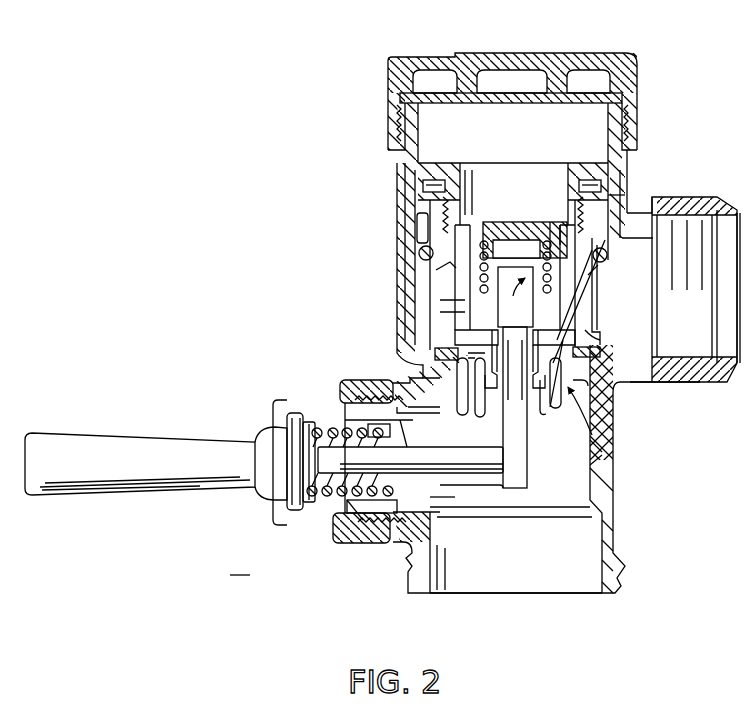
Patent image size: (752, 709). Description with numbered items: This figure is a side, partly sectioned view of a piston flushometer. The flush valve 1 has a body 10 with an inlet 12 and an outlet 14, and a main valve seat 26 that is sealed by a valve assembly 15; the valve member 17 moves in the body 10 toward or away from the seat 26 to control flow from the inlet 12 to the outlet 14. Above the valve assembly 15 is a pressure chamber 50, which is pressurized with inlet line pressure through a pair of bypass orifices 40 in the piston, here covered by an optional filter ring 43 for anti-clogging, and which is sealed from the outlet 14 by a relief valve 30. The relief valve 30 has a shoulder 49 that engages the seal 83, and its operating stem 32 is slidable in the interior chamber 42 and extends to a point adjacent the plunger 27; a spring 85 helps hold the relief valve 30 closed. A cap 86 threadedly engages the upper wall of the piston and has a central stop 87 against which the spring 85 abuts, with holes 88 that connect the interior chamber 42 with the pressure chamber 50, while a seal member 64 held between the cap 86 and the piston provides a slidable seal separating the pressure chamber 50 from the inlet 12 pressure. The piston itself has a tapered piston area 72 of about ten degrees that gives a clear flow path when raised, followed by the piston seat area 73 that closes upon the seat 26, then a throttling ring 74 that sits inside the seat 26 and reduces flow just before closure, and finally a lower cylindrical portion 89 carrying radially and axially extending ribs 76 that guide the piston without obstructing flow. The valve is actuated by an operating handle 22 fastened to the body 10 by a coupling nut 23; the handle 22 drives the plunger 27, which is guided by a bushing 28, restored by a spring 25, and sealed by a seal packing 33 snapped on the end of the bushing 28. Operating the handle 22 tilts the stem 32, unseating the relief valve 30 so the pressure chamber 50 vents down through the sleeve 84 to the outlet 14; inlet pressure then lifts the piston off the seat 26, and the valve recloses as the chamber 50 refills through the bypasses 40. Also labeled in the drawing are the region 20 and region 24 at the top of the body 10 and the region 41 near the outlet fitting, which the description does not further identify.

The flush valve 1 is at (237, 573).
The body 10 is at (627, 166).
The inlet 12 is at (707, 233).
The outlet 14 is at (622, 593).
The valve assembly 15 is at (612, 200).
The valve member 17 is at (436, 294).
The cap plate 20 is at (622, 104).
The operating handle 22 is at (143, 434).
The coupling nut 23 is at (366, 538).
The cap 24 is at (582, 56).
The spring 25 is at (320, 410).
The main valve seat 26 is at (705, 378).
The plunger 27 is at (492, 490).
The bushing 28 is at (340, 383).
The relief valve 30 is at (515, 297).
The relief valve stem 32 is at (520, 470).
The seal packing 33 is at (455, 497).
The bypass orifice 40 is at (436, 270).
The outlet passage 41 is at (650, 382).
The interior chamber 42 is at (592, 288).
The filter ring 43 is at (419, 257).
The shoulder 49 is at (495, 268).
The pressure chamber 50 is at (526, 143).
The seal member 64 is at (422, 186).
The tapered piston area 72 is at (590, 335).
The piston seat area 73 is at (603, 393).
The throttling ring 74 is at (465, 387).
The ribs 76 is at (613, 447).
The seal 83 is at (457, 313).
The sleeve 84 is at (540, 392).
The spring 85 is at (553, 222).
The cap 86 is at (586, 175).
The central stop 87 is at (523, 226).
The holes 88 is at (477, 216).
The lower cylindrical portion 89 is at (615, 467).